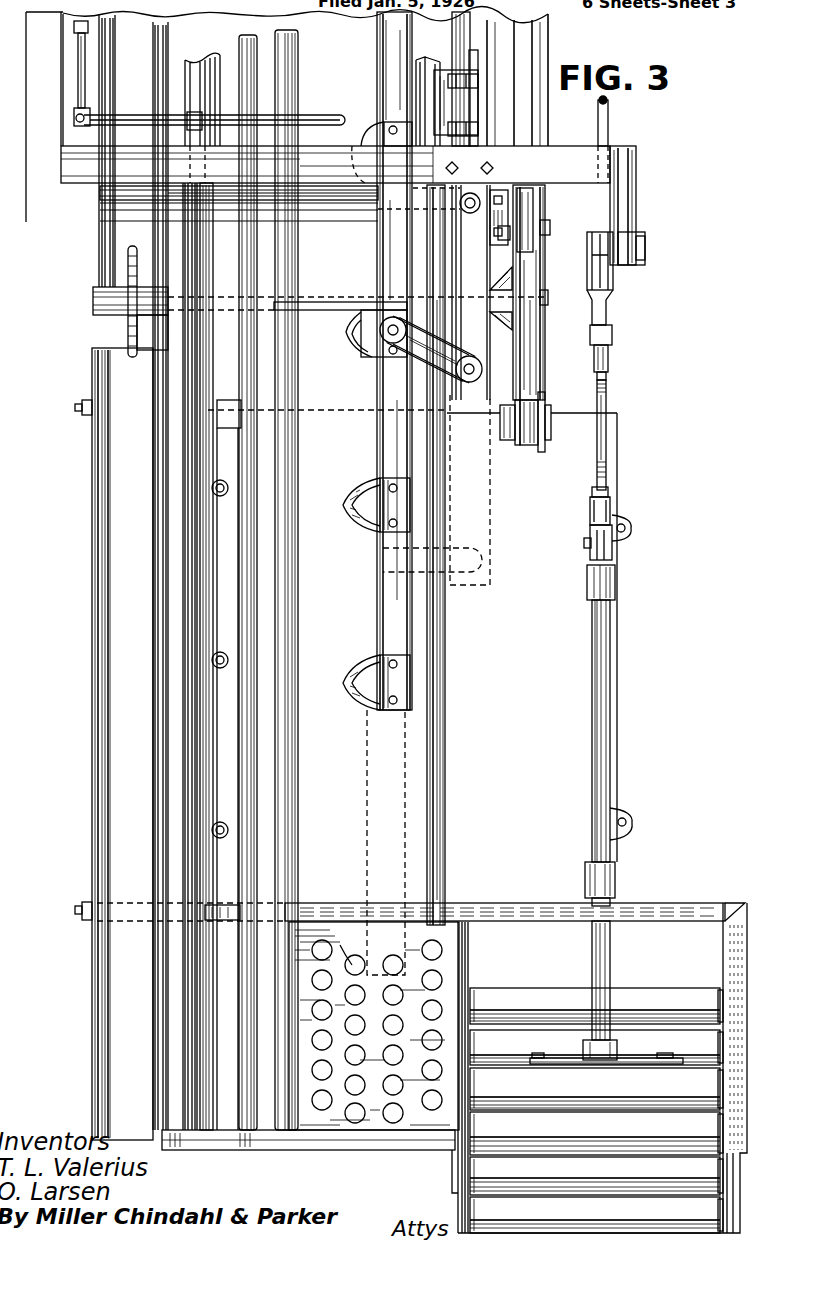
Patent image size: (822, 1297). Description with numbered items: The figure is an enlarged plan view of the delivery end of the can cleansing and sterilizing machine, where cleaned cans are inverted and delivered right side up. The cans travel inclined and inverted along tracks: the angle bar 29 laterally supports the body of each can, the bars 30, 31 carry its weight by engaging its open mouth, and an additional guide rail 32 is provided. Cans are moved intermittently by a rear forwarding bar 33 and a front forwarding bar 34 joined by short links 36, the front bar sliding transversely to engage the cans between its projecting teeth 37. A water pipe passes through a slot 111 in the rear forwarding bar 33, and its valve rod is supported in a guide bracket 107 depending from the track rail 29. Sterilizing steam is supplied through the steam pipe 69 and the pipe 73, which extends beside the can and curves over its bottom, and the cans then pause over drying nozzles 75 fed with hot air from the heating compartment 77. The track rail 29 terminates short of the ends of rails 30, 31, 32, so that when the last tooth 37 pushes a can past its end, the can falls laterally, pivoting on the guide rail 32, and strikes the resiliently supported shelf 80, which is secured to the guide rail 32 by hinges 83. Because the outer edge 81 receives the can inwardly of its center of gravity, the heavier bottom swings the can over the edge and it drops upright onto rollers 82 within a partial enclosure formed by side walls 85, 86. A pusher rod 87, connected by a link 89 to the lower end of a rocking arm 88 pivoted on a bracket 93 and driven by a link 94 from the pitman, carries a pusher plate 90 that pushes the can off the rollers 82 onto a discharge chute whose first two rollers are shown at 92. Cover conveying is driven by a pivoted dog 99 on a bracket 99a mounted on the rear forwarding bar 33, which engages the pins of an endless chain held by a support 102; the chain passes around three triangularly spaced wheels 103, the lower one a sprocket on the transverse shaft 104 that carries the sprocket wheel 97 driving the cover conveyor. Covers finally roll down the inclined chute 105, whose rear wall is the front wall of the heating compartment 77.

The angle bar 29 is at (423, 774).
The bar 30 is at (249, 801).
The bar 31 is at (218, 856).
The guide rail 32 is at (279, 764).
The rear forwarding bar 33 is at (478, 48).
The front forwarding bar 34 is at (379, 453).
The short links 36 is at (440, 353).
The projecting teeth 37 is at (357, 663).
The steam pipe 69 is at (477, 195).
The pipe 73 is at (318, 118).
The nozzles 75 is at (214, 656).
The heating compartment 77 is at (226, 770).
The horizontal shelf 80 is at (418, 969).
The outer edge 81 is at (469, 983).
The rollers 82 is at (713, 999).
The hinges 83 is at (340, 944).
The side wall 85 is at (677, 905).
The side wall 86 is at (744, 946).
The pusher rod 87 is at (606, 766).
The rocking arm 88 is at (607, 306).
The link 89 is at (606, 429).
The pusher plate 90 is at (623, 1058).
The rollers 92 is at (705, 1223).
The bracket 93 is at (632, 201).
The link 94 is at (609, 136).
The sprocket wheel 97 is at (128, 326).
The pivoted dog 99 is at (531, 216).
The bracket 99a is at (502, 232).
The support 102 is at (536, 344).
The wheels 103 is at (549, 229).
The transverse shaft 104 is at (321, 312).
The chute 105 is at (125, 539).
The guide bracket 107 is at (456, 103).
The slot 111 is at (478, 126).